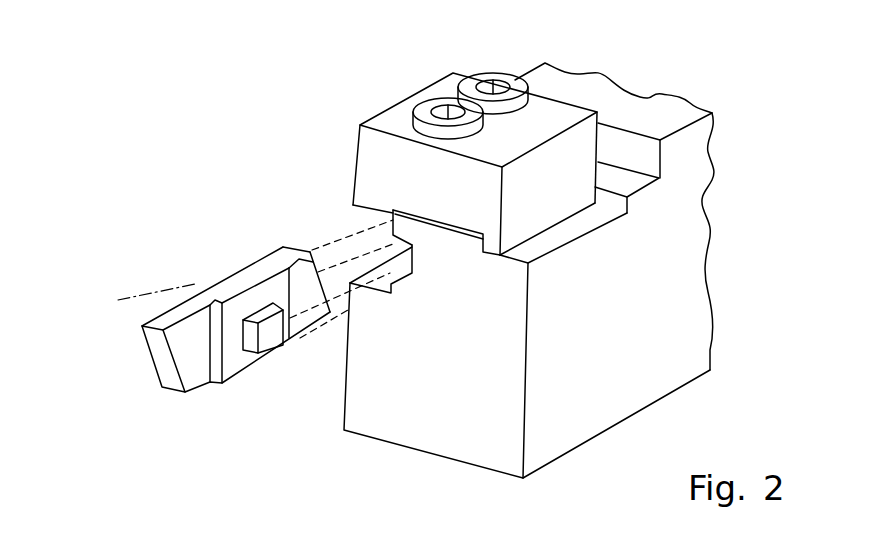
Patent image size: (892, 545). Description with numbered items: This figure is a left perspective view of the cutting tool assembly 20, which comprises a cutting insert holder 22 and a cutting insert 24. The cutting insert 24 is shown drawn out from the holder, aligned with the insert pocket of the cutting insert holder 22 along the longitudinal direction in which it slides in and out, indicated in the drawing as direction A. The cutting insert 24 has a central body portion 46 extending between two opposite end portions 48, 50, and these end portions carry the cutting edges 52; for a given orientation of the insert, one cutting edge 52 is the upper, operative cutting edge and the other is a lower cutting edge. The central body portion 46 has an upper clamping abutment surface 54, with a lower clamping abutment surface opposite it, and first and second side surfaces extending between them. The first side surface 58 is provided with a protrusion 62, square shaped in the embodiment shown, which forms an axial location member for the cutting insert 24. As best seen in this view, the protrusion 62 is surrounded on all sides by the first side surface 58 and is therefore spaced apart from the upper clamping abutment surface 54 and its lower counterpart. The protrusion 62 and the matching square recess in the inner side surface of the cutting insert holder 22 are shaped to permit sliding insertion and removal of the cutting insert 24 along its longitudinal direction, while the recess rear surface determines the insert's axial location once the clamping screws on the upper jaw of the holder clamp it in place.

The cutting tool assembly 20 is at (207, 112).
The cutting insert holder 22 is at (396, 414).
The cutting insert 24 is at (201, 332).
The central body portion 46 is at (229, 263).
The end portion 48 is at (120, 305).
The end portion 50 is at (265, 244).
The cutting edge 52 is at (148, 342).
The upper clamping abutment surface 54 is at (210, 295).
The first side surface 58 is at (231, 366).
The protrusion 62 is at (265, 343).
The insertion direction A is at (307, 345).